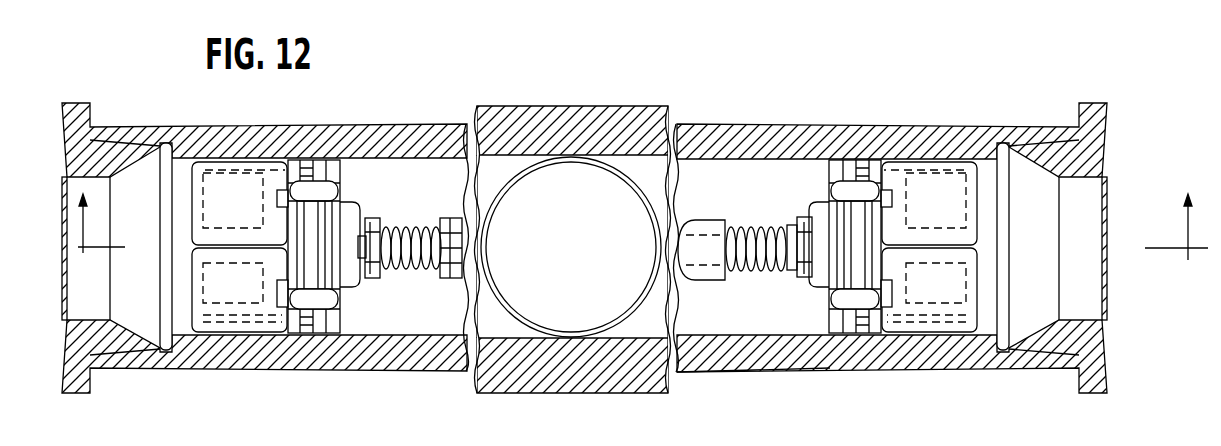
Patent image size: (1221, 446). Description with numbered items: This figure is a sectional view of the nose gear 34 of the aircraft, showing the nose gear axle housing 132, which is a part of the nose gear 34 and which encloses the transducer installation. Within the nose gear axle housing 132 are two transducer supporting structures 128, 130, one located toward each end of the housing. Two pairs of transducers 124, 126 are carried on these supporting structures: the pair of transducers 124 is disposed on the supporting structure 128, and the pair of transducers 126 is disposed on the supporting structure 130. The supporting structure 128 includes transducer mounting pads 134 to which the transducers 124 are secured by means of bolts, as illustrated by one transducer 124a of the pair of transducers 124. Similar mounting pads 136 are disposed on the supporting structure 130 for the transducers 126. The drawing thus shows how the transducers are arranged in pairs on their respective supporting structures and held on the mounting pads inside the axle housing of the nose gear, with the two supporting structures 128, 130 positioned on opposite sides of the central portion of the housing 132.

The nose gear 34 is at (768, 375).
The transducers 124 is at (830, 198).
The transducer 124a is at (957, 297).
The transducers 126 is at (270, 267).
The transducer supporting structure 128 is at (830, 290).
The transducer supporting structure 130 is at (323, 297).
The nose gear axle housing 132 is at (432, 358).
The transducer mounting pads 134 is at (897, 207).
The mounting pads 136 is at (270, 222).